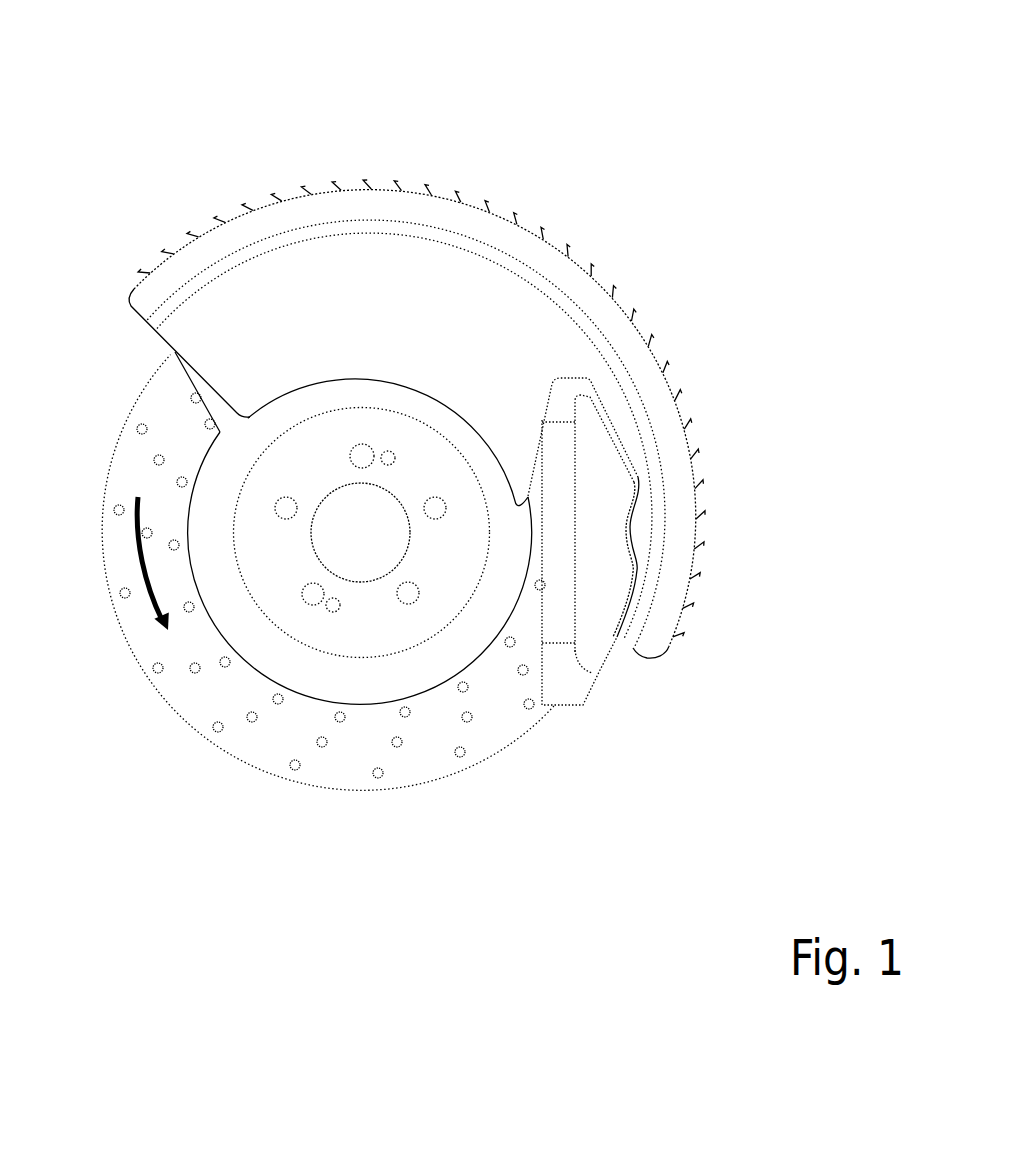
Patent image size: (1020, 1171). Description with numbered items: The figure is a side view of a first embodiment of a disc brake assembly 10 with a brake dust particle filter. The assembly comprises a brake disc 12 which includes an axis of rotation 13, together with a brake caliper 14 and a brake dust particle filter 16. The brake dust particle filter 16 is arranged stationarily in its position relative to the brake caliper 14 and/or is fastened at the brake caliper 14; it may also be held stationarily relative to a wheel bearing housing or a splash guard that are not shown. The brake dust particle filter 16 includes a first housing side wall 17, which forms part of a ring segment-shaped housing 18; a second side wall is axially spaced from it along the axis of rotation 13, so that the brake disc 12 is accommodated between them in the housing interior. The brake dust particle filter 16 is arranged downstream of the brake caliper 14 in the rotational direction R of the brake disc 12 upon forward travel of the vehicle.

The disc brake assembly 10 is at (464, 405).
The brake disc 12 is at (212, 490).
The axis of rotation 13 is at (358, 533).
The brake caliper 14 is at (560, 502).
The brake dust particle filter 16 is at (268, 190).
The first housing side wall 17 is at (468, 296).
The ring segment-shaped housing 18 is at (357, 186).
The rotational direction R is at (140, 557).